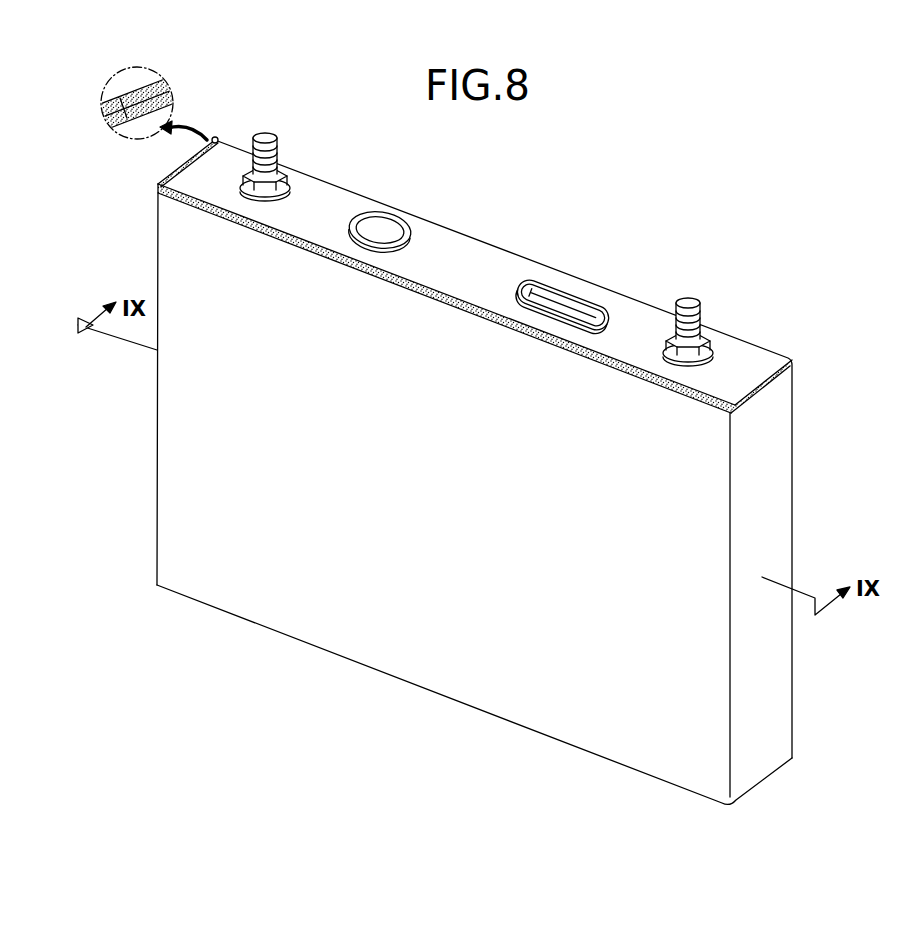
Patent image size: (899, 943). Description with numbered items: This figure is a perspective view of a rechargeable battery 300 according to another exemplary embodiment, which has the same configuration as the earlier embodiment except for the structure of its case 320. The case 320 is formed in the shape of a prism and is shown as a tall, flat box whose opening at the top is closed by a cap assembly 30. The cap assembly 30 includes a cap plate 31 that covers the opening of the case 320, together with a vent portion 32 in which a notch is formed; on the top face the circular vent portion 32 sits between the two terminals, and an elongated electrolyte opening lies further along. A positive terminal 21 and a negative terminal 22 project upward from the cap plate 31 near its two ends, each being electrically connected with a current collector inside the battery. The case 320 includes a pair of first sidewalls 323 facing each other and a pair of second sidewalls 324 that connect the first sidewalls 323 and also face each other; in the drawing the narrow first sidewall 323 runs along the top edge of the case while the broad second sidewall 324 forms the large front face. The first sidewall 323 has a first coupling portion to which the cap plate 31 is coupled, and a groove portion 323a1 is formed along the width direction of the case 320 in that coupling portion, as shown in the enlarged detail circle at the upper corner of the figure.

The rechargeable battery 300 is at (655, 152).
The cap assembly 30 is at (467, 254).
The cap plate 31 is at (383, 228).
The vent portion 32 is at (548, 292).
The positive terminal 21 is at (265, 140).
The negative terminal 22 is at (688, 306).
The case 320 is at (418, 671).
The first sidewall 323 is at (160, 183).
The groove portion 323a1 is at (104, 112).
The second sidewall 324 is at (183, 230).